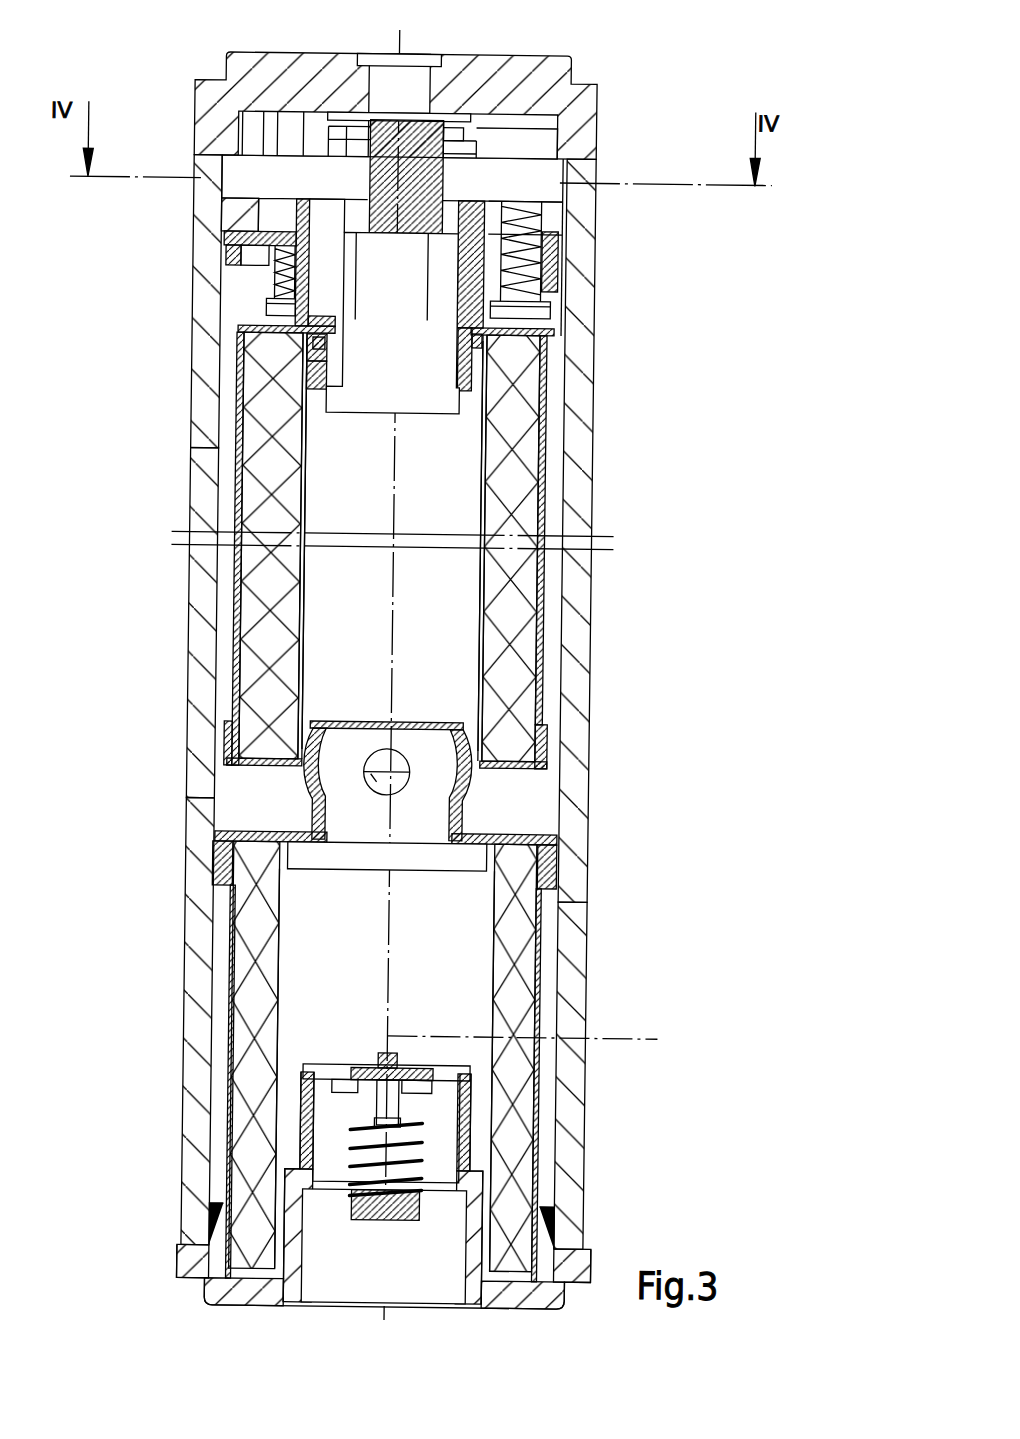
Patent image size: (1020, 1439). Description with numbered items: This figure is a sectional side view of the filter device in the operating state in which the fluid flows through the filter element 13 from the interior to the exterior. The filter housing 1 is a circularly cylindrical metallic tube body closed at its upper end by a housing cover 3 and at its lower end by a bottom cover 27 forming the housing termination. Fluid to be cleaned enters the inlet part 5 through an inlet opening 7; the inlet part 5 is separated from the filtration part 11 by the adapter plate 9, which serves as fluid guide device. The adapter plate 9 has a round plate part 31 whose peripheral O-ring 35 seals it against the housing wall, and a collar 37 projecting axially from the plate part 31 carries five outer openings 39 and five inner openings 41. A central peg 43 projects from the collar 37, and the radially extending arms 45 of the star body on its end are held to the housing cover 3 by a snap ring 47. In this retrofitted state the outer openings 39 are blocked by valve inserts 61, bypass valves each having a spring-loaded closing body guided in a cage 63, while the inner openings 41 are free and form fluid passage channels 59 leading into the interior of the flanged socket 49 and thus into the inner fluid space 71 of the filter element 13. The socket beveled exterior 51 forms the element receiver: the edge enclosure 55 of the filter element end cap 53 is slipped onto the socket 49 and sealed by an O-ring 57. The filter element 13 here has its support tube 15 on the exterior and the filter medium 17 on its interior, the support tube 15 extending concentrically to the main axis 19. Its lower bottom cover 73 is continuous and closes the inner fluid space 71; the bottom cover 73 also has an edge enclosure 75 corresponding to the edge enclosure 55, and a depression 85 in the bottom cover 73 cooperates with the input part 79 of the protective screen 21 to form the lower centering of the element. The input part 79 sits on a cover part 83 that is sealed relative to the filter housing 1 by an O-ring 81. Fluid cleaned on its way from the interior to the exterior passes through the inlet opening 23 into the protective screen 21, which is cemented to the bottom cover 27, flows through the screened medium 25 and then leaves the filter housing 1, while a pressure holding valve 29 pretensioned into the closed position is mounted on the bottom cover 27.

The filter housing 1 is at (569, 916).
The housing cover 3 is at (589, 84).
The inlet part 5 is at (267, 172).
The inlet opening 7 is at (576, 240).
The adapter plate 9 is at (265, 185).
The filtration part 11 is at (308, 342).
The filter element 13 is at (548, 740).
The support tube 15 is at (255, 468).
The filter medium 17 is at (262, 620).
The main axis 19 is at (535, 1037).
The protective screen 21 is at (272, 950).
The inlet opening 23 is at (368, 786).
The screened medium 25 is at (262, 914).
The bottom cover 27 is at (563, 1255).
The pressure holding valve 29 is at (342, 1084).
The plate part 31 is at (303, 212).
The O-ring 35 is at (228, 237).
The collar 37 is at (439, 188).
The outer openings 39 is at (492, 212).
The inner openings 41 is at (312, 230).
The central peg 43 is at (551, 97).
The arms 45 is at (446, 140).
The snap ring 47 is at (490, 130).
The flanged socket 49 is at (314, 368).
The socket beveled exterior 51 is at (472, 402).
The filter element end cap 53 is at (528, 322).
The edge enclosure 55 is at (316, 388).
The O-ring 57 is at (453, 355).
The fluid passage channels 59 is at (292, 310).
The valve inserts 61 is at (522, 286).
The cage 63 is at (265, 296).
The inner fluid space 71 is at (450, 491).
The bottom cover 73 is at (466, 772).
The edge enclosure 75 is at (318, 767).
The input part 79 is at (465, 810).
The O-ring 81 is at (215, 845).
The cover part 83 is at (505, 825).
The depression 85 is at (432, 722).